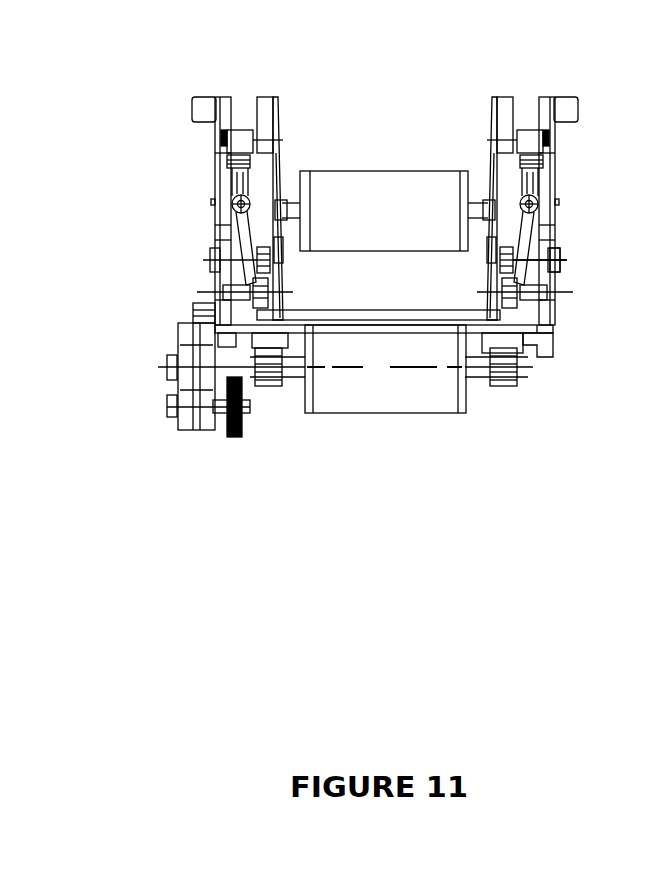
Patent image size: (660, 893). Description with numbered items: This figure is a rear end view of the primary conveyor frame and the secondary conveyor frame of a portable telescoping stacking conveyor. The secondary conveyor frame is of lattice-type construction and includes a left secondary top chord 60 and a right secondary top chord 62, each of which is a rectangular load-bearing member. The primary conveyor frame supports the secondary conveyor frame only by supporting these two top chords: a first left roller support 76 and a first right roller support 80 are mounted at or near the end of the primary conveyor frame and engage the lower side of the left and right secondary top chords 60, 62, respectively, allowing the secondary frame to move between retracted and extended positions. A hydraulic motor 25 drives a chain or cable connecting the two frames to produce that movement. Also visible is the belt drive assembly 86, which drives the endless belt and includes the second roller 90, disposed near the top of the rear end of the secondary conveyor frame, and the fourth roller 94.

The left secondary top chord 60 is at (278, 188).
The right secondary top chord 62 is at (537, 184).
The first left roller support 76 is at (265, 137).
The first right roller support 80 is at (507, 137).
The second roller 90 is at (353, 193).
The fourth roller 94 is at (393, 397).
The hydraulic motor 25 is at (563, 243).
The belt drive assembly 86 is at (175, 422).